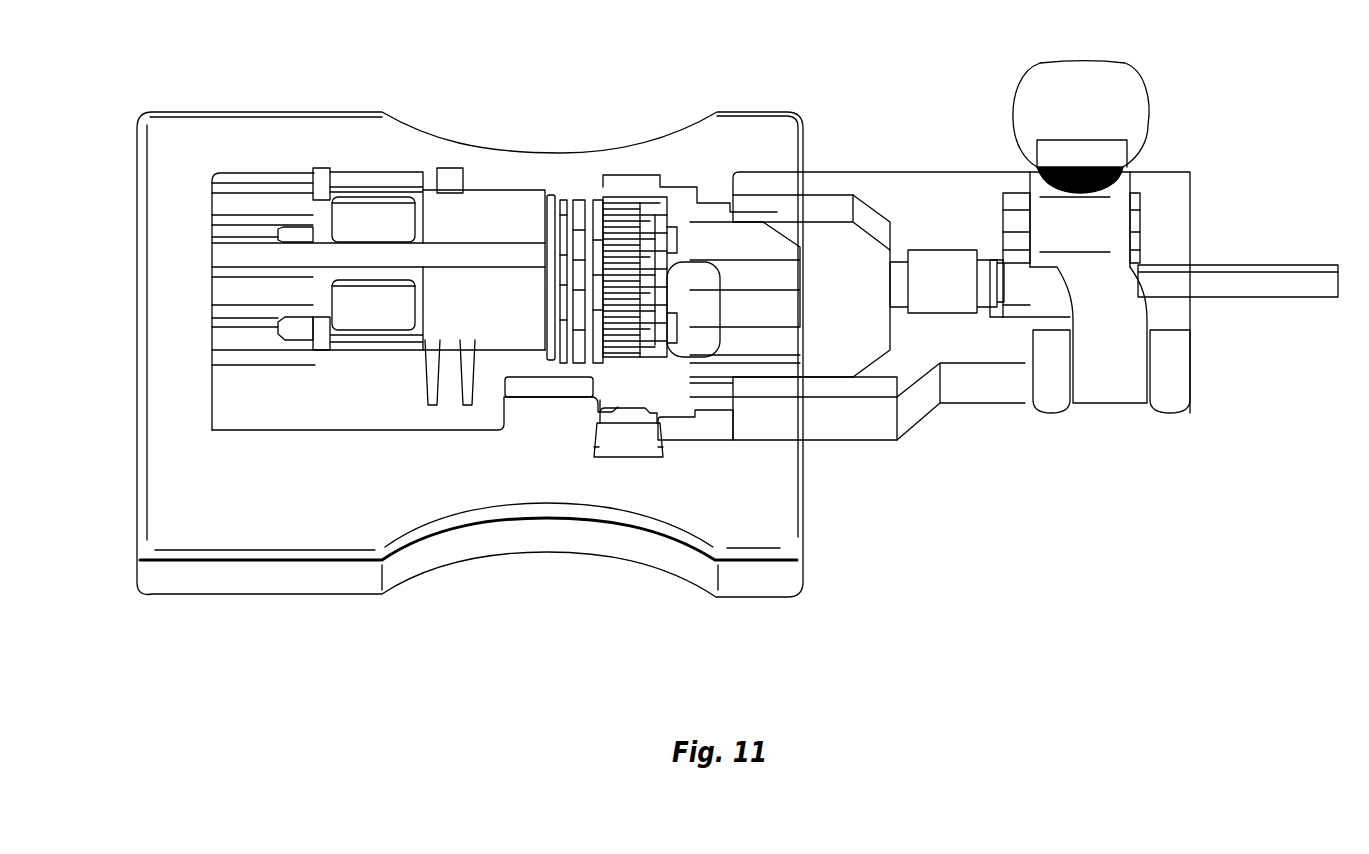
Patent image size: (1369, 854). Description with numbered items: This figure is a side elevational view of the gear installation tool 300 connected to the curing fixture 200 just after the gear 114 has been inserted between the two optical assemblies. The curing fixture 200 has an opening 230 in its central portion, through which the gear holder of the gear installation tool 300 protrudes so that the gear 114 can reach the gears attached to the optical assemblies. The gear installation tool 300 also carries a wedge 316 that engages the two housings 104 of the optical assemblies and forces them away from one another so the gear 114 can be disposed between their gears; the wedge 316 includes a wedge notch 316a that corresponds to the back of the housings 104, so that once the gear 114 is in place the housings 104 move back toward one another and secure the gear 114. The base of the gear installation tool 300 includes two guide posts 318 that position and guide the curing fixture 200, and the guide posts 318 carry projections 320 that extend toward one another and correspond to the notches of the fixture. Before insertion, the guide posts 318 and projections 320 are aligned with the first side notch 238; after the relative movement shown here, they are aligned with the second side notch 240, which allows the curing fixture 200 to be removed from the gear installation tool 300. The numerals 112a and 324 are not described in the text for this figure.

The gear installation tool 300 is at (365, 112).
The housings 104 is at (445, 205).
The drive shaft 112a is at (233, 250).
The wedge notch 316a is at (557, 195).
The wedge 316 is at (572, 196).
The gear 114 is at (642, 217).
The projections 320 is at (630, 407).
The second side notch 240 is at (597, 403).
The guide posts 318 is at (622, 442).
The first side notch 238 is at (717, 420).
The arm 324 is at (838, 418).
The opening 230 is at (863, 343).
The curing fixture 200 is at (930, 172).